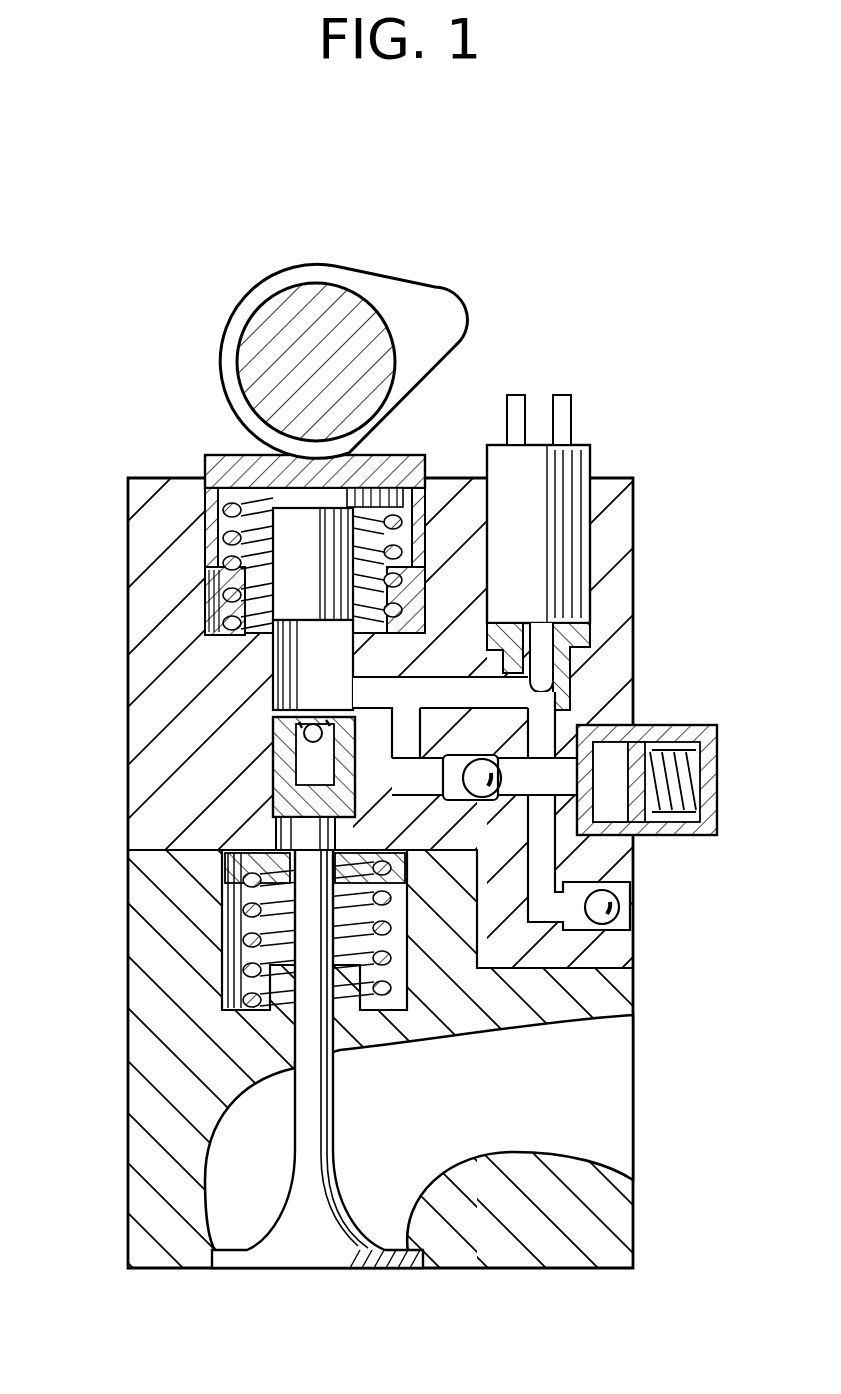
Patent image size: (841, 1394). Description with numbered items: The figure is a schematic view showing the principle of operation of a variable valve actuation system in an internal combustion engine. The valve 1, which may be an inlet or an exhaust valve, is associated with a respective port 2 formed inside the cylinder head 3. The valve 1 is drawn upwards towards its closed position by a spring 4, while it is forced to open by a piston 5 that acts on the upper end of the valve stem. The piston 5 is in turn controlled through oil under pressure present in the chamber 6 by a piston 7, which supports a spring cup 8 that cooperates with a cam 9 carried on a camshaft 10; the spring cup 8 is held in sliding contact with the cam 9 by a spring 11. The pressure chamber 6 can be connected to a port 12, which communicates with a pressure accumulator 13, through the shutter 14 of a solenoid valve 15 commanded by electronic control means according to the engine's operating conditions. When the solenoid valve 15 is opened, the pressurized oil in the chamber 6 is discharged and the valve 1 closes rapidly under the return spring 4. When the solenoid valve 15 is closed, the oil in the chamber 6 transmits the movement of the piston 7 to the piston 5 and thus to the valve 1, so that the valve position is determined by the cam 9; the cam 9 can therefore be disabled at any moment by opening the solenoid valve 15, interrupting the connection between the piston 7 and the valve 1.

The valve 1 is at (336, 1230).
The port 2 is at (597, 1163).
The cylinder head 3 is at (150, 1005).
The spring 4 is at (240, 913).
The piston 5 is at (272, 768).
The chamber 6 is at (270, 688).
The piston 7 is at (300, 580).
The spring cup 8 is at (212, 458).
The cam 9 is at (430, 298).
The camshaft 10 is at (262, 283).
The spring 11 is at (402, 523).
The port 12 is at (620, 748).
The pressure accumulator 13 is at (612, 800).
The shutter 14 is at (540, 692).
The solenoid valve 15 is at (582, 523).